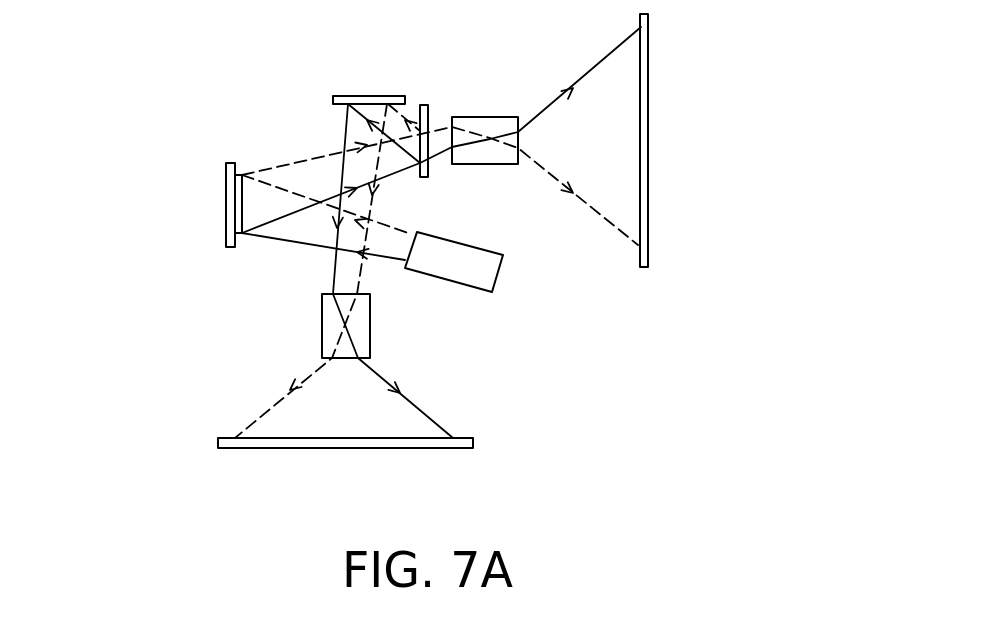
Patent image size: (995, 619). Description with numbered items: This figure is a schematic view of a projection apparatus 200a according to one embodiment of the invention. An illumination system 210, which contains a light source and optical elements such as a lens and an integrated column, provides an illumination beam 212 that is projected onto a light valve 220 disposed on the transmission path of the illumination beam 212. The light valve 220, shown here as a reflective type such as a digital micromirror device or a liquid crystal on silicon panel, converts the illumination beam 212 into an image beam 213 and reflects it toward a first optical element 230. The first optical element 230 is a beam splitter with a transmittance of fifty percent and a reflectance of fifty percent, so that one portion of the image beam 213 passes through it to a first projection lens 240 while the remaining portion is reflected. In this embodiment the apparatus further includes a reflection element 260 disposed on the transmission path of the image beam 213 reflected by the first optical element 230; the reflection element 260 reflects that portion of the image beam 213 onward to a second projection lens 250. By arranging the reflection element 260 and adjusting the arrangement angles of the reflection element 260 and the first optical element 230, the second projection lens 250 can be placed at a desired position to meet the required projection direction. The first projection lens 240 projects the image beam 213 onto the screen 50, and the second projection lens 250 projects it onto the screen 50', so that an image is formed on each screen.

The projection apparatus 200a is at (215, 58).
The illumination system 210 is at (477, 265).
The illumination beam 212 is at (295, 253).
The image beam 213 is at (310, 145).
The light valve 220 is at (227, 200).
The first optical element 230 is at (425, 108).
The first projection lens 240 is at (495, 128).
The second projection lens 250 is at (333, 330).
The reflection element 260 is at (370, 100).
The screen 50 is at (686, 140).
The screen 50' is at (345, 477).